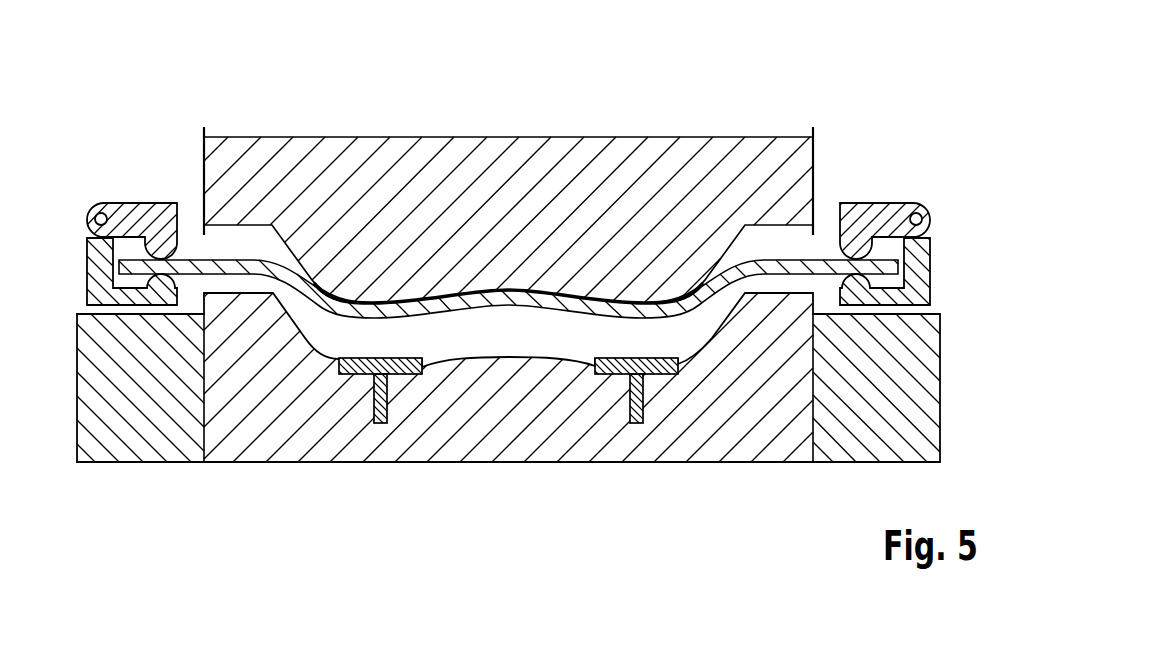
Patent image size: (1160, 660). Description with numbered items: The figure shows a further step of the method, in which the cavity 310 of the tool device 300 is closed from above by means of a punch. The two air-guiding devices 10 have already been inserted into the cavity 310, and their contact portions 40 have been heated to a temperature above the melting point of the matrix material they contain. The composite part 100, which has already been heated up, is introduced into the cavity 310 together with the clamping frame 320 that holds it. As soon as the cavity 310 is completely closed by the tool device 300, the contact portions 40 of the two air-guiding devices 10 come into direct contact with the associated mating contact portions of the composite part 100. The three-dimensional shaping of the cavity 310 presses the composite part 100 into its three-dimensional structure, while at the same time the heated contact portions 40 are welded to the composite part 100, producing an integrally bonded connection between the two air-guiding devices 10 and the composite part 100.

The tool device 300 is at (283, 95).
The cavity 310 is at (132, 452).
The clamping frame 320 is at (925, 258).
The composite part 100 is at (543, 300).
The contact portions 40 is at (380, 358).
The air-guiding devices 10 is at (407, 403).